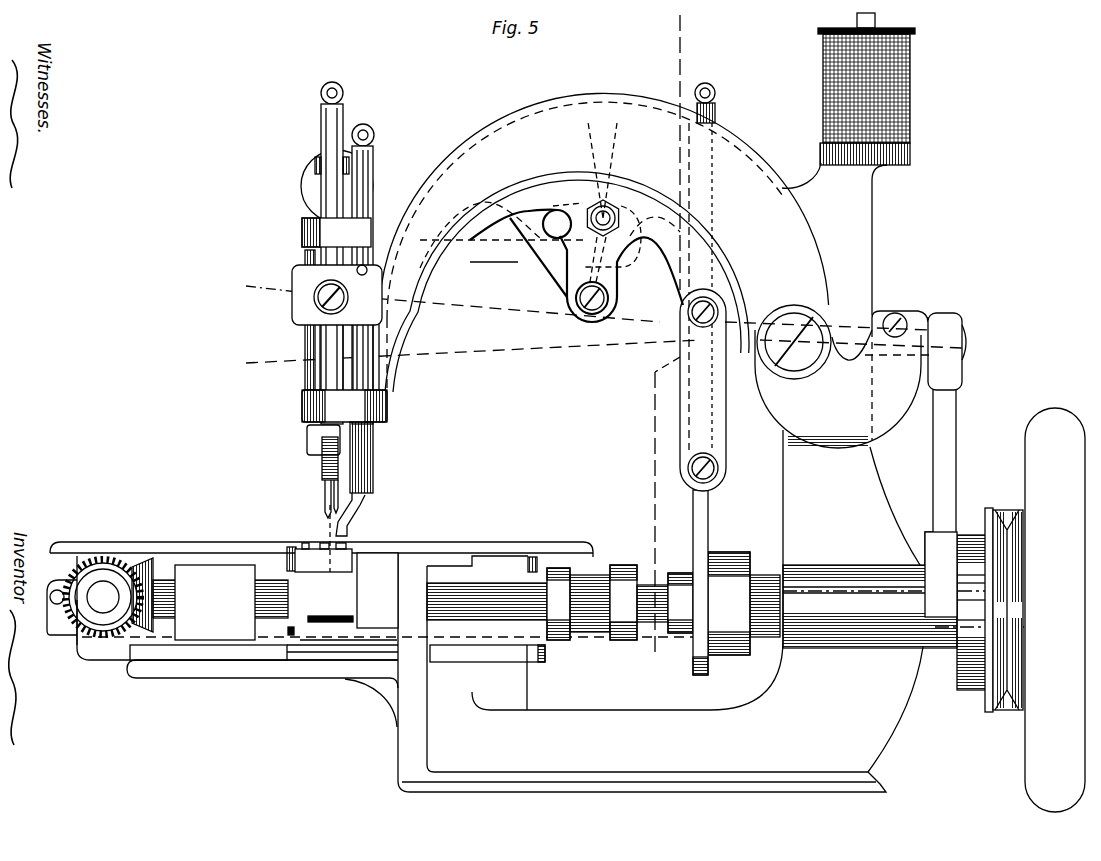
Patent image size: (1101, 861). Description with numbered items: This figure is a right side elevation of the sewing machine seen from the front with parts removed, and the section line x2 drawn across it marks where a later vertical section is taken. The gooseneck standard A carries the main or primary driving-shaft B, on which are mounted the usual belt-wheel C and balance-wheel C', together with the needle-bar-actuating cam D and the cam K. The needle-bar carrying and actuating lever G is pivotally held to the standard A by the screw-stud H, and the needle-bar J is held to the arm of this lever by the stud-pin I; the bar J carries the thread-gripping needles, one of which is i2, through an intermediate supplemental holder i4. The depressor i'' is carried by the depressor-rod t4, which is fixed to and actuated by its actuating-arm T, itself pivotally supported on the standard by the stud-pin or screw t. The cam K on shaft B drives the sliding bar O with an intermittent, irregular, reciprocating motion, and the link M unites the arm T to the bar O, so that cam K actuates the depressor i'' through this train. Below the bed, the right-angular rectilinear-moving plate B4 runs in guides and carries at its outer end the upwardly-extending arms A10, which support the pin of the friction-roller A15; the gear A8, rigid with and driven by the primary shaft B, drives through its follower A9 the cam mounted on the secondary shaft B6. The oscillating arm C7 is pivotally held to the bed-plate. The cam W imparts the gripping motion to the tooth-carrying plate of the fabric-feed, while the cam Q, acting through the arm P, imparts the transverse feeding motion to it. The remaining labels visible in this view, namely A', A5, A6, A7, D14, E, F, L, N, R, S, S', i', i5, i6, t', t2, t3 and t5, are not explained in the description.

The standard A is at (489, 442).
The needle bar bracket A' is at (334, 320).
The lower arm A5 is at (239, 672).
The arm bracket A6 is at (140, 651).
The bearing housing A7 is at (220, 602).
The gear A8 is at (150, 560).
The follower A9 is at (105, 556).
The upwardly-extending arms A10 is at (60, 636).
The friction-roller A15 is at (55, 590).
The main driving-shaft B is at (506, 606).
The rectilinear-moving plate B4 is at (321, 645).
The secondary shaft B6 is at (100, 600).
The belt-wheel C is at (987, 616).
The balance-wheel C' is at (1055, 610).
The oscillating arm C7 is at (298, 629).
The needle-bar-actuating cam D is at (960, 666).
The disk D14 is at (330, 178).
The arm E is at (957, 470).
The bracket F is at (966, 340).
The needle-bar carrying and actuating lever G is at (838, 389).
The screw-stud H is at (800, 322).
The stud-pin I is at (320, 300).
The needle-bar J is at (327, 337).
The cam K is at (733, 552).
The post L is at (716, 115).
The link M is at (726, 430).
The collar N is at (678, 572).
The sliding bar O is at (708, 510).
The arm P is at (590, 641).
The cam Q is at (626, 642).
The plate R is at (548, 556).
The thread S is at (594, 315).
The thread S' is at (464, 356).
The depressor-actuating arm T is at (492, 220).
The cam W is at (377, 590).
The presser bar i' is at (375, 457).
The depressor i'' is at (371, 508).
The thread-gripping needle i2 is at (330, 500).
The supplemental holder i4 is at (307, 440).
The needle plate i5 is at (357, 546).
The throat plate i6 is at (292, 547).
The stud-pin or screw t is at (558, 299).
The thread guide t' is at (777, 324).
The nut t2 is at (618, 218).
The take-up lever t3 is at (606, 276).
The depressor-rod t4 is at (373, 165).
The guard t5 is at (517, 256).
The section line x2 is at (671, 345).